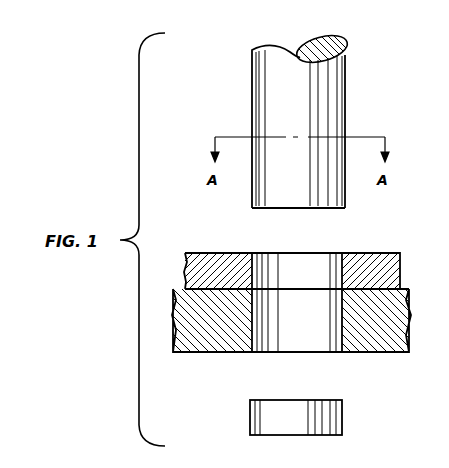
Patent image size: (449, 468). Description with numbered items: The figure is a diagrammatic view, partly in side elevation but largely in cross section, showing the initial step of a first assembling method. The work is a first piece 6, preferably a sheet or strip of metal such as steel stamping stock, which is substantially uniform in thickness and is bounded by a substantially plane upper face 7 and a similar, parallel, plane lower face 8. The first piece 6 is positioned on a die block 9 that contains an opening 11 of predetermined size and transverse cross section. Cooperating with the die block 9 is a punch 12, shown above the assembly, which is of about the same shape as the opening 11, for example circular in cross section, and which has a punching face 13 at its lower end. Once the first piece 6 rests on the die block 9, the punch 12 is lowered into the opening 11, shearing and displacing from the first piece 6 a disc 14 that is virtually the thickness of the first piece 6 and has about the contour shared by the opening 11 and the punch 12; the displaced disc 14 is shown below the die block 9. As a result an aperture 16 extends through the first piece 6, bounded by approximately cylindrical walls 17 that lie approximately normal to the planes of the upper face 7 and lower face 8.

The first piece 6 is at (376, 253).
The upper face 7 is at (211, 253).
The lower face 8 is at (192, 271).
The die block 9 is at (400, 352).
The opening 11 is at (318, 343).
The punch 12 is at (283, 73).
The punching face 13 is at (260, 208).
The disc 14 is at (302, 435).
The aperture 16 is at (292, 270).
The cylindrical walls 17 is at (334, 262).